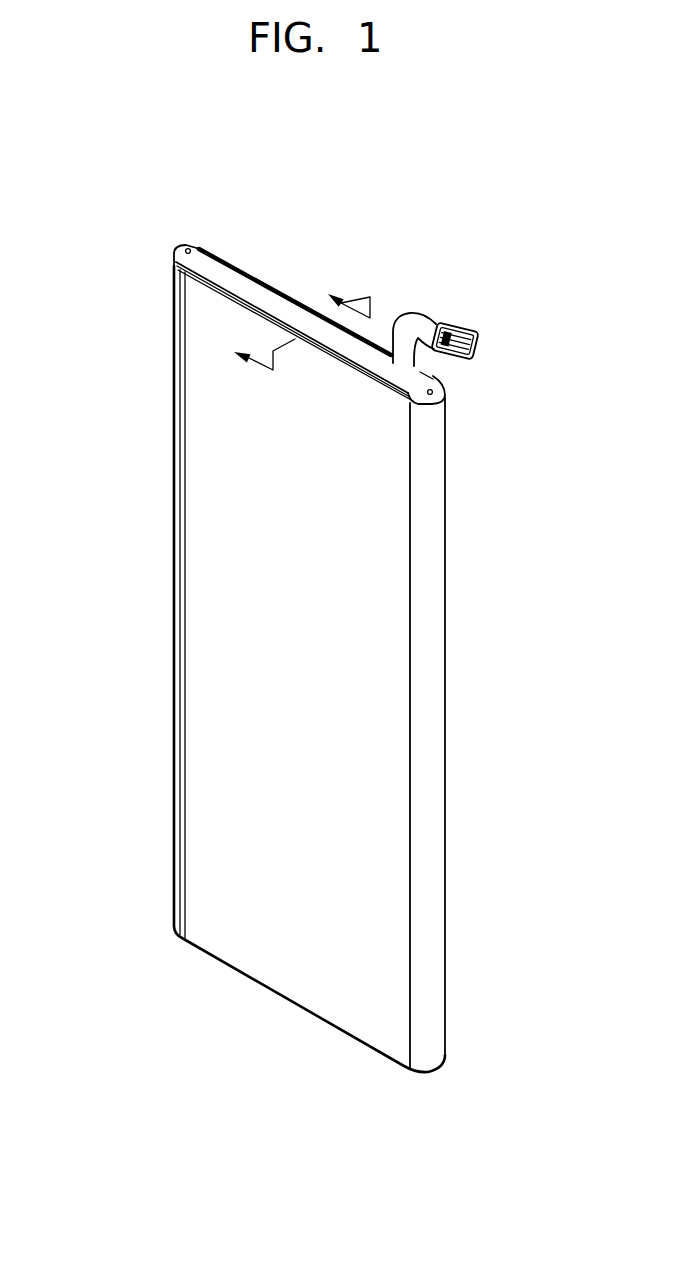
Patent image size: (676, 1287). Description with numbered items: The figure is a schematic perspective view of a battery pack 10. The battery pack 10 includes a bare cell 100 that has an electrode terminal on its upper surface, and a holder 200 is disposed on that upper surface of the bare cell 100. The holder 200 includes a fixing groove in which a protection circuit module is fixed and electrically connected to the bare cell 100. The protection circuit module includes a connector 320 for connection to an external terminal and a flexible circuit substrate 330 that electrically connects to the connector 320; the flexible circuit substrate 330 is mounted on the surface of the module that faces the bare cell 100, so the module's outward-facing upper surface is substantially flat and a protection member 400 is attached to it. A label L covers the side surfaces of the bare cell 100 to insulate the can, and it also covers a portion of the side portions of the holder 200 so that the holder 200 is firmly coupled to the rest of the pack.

The battery pack 10 is at (459, 213).
The bare cell 100 is at (142, 571).
The holder 200 is at (190, 246).
The connector 320 is at (460, 328).
The flexible circuit substrate 330 is at (408, 322).
The protection member 400 is at (248, 282).
The label L is at (430, 709).